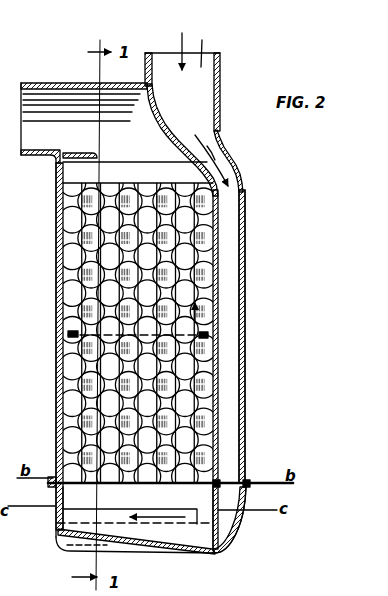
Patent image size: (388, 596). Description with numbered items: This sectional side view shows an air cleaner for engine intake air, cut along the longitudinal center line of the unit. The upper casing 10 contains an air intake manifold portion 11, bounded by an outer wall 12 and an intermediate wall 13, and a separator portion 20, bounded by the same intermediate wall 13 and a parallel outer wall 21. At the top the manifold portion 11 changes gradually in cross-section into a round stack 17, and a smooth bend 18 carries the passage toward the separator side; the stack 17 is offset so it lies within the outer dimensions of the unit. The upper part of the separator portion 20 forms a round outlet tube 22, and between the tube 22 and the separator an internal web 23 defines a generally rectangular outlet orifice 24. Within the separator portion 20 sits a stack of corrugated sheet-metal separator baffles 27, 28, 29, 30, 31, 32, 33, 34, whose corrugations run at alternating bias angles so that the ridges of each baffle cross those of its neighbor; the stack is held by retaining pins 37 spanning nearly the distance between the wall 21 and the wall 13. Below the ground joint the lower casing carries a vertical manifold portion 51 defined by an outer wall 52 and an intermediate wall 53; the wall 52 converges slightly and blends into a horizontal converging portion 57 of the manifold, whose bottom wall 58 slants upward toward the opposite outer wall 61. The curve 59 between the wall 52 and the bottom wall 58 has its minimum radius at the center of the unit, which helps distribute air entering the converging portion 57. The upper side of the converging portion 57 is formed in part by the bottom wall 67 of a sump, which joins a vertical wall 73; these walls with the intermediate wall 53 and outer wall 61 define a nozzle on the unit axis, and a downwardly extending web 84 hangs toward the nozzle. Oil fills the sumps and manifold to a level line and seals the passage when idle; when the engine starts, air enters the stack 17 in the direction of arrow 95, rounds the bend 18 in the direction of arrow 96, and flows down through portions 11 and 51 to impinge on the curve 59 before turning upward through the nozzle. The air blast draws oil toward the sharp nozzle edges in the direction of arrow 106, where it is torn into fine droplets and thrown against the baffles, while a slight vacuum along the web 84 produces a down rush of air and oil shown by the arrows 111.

The upper casing 10 is at (249, 259).
The air intake manifold portion 11 is at (234, 298).
The outer wall 12 is at (245, 337).
The intermediate wall 13 is at (218, 247).
The round stack 17 is at (212, 63).
The bend 18 is at (219, 137).
The separator portion 20 is at (60, 288).
The outer wall 21 is at (60, 302).
The outlet tube 22 is at (30, 133).
The internal web 23 is at (63, 173).
The outlet orifice 24 is at (115, 156).
The first baffle 27 is at (72, 348).
The second baffle 28 is at (101, 372).
The third baffle 29 is at (100, 381).
The fourth baffle 30 is at (147, 404).
The baffle 31 is at (210, 392).
The baffle 32 is at (178, 427).
The baffle 33 is at (193, 420).
The baffle 34 is at (200, 442).
The retaining pins 37 is at (210, 337).
The vertical manifold portion 51 is at (226, 498).
The outer wall 52 is at (241, 516).
The intermediate wall 53 is at (237, 531).
The horizontal converging portion 57 is at (170, 552).
The bottom wall 58 is at (140, 548).
The curve 59 is at (226, 553).
The outer wall 61 is at (54, 512).
The bottom wall 67 is at (85, 522).
The vertical wall 73 is at (108, 503).
The downwardly extending web 84 is at (214, 553).
The arrow 95 is at (199, 46).
The arrow 96 is at (228, 163).
The arrow 106 is at (152, 512).
The arrows 111 is at (205, 520).